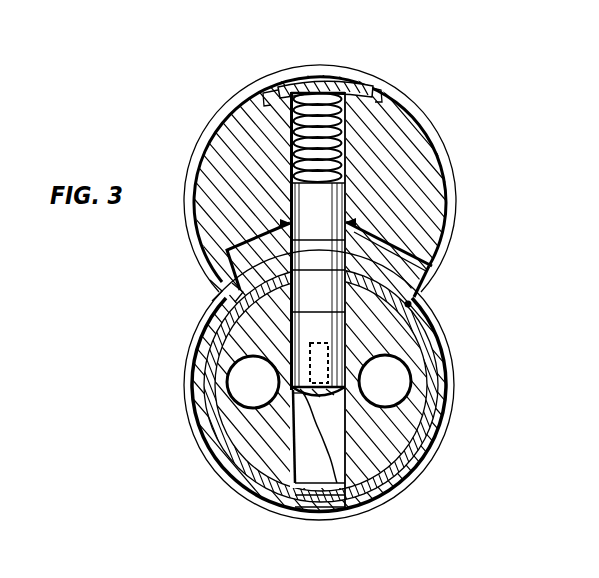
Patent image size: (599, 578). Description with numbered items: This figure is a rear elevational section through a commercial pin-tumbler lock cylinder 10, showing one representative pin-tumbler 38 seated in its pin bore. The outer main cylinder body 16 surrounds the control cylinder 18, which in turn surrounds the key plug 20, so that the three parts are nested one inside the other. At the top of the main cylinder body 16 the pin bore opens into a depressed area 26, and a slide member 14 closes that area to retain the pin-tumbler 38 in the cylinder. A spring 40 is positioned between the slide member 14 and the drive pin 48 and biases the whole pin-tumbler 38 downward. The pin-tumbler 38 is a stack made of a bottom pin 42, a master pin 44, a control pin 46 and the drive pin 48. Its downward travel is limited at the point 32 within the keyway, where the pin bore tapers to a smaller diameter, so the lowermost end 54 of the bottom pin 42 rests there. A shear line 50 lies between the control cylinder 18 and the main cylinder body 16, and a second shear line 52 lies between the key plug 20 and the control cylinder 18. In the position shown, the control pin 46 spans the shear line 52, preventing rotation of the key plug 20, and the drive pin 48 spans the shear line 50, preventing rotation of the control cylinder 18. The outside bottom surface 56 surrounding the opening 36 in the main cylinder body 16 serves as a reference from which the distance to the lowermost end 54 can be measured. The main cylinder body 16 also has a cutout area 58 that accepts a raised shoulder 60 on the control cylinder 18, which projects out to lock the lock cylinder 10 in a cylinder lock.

The pin-tumbler lock cylinder 10 is at (474, 121).
The slide member 14 is at (355, 81).
The main cylinder body 16 is at (214, 180).
The control cylinder 18 is at (220, 330).
The key plug 20 is at (396, 330).
The depressed area 26 is at (215, 122).
The point 32 is at (345, 412).
The opening 36 is at (320, 506).
The pin-tumbler 38 is at (457, 198).
The spring 40 is at (370, 111).
The bottom pin 42 is at (226, 336).
The master pin 44 is at (433, 265).
The control pin 46 is at (352, 222).
The drive pin 48 is at (346, 178).
The shear line 50 is at (288, 226).
The second shear line 52 is at (217, 287).
The lowermost end 54 is at (293, 398).
The outside bottom surface 56 is at (346, 508).
The cutout area 58 is at (425, 298).
The raised shoulder 60 is at (410, 304).